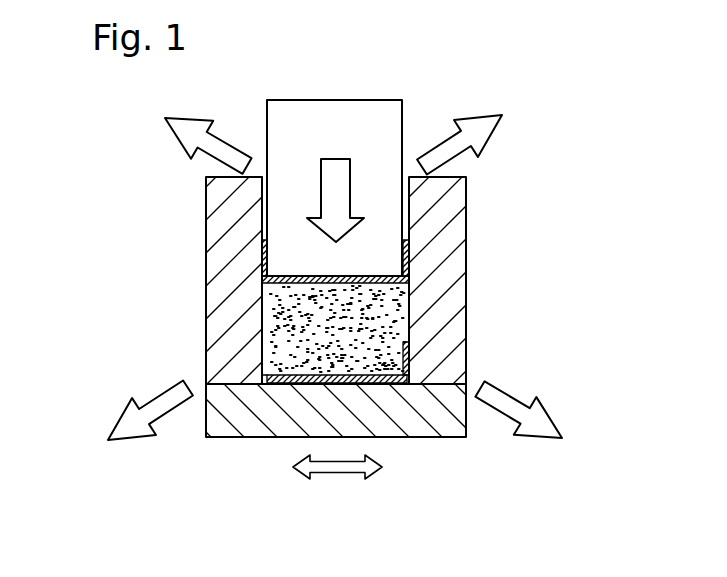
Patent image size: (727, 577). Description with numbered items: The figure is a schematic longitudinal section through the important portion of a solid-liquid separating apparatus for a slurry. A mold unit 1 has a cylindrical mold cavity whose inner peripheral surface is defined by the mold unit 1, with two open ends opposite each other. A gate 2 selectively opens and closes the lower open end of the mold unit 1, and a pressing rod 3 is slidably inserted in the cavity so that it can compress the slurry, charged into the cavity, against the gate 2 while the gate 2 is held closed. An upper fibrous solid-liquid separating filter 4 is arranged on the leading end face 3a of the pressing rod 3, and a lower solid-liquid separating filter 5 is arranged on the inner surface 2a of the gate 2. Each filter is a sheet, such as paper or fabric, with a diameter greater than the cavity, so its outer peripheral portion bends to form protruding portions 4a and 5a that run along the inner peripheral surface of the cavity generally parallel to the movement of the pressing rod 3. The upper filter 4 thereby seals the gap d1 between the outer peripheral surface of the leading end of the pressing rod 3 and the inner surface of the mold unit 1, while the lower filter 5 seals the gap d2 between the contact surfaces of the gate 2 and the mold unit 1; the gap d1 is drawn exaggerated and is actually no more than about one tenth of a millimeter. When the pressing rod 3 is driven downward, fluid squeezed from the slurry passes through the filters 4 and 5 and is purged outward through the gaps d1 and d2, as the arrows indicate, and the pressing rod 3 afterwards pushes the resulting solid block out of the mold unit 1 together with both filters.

The mold unit 1 is at (445, 287).
The gate 2 is at (424, 424).
The inner surface of the gate 2a is at (318, 376).
The pressing rod 3 is at (372, 117).
The leading end face of the pressing rod 3a is at (307, 283).
The upper solid-liquid separating filter 4 is at (395, 286).
The protruding portion of the upper filter 4a is at (412, 246).
The lower solid-liquid separating filter 5 is at (372, 386).
The protruding portion of the lower filter 5a is at (413, 367).
The gap d1 is at (262, 236).
The gap d2 is at (252, 387).